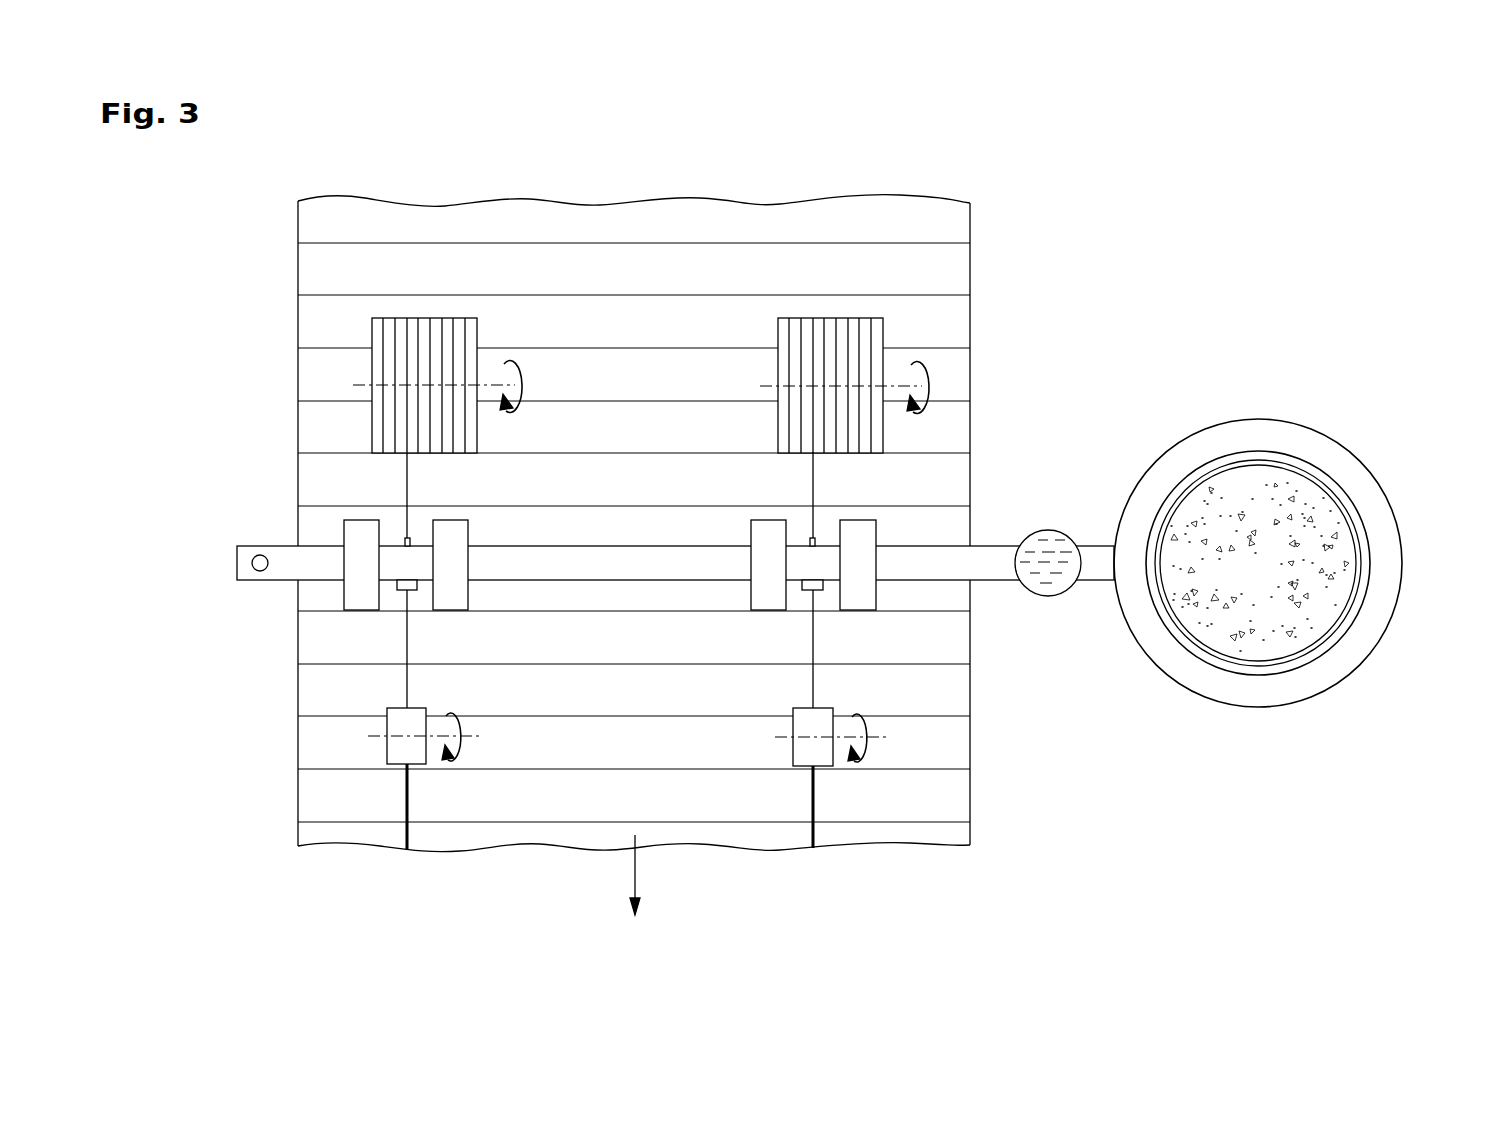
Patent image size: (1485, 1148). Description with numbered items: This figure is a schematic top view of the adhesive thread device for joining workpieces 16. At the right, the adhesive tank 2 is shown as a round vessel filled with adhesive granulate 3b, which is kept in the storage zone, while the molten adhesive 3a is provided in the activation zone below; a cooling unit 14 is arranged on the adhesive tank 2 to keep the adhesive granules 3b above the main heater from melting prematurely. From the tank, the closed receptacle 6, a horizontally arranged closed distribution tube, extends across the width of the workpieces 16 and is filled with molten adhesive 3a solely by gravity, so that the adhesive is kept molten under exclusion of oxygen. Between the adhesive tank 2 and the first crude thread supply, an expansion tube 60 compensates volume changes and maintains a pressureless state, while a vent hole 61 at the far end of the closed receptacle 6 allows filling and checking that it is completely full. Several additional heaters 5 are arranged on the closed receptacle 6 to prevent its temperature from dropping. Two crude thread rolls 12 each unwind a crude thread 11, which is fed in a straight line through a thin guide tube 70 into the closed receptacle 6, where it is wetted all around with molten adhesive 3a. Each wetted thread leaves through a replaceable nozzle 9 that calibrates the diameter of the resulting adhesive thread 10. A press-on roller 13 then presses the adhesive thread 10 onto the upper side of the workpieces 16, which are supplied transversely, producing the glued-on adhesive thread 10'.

The adhesive tank 2 is at (1343, 493).
The molten adhesive 3a is at (1055, 573).
The adhesive granulate 3b is at (1272, 525).
The additional heater 5 is at (344, 596).
The closed receptacle 6 is at (573, 580).
The nozzle 9 is at (397, 592).
The adhesive thread 10 is at (633, 660).
The glued-on adhesive thread 10' is at (632, 841).
The crude thread 11 is at (407, 482).
The crude thread roll 12 is at (372, 333).
The press-on roller 13 is at (387, 750).
The cooling unit 14 is at (1393, 507).
The workpiece 16 is at (357, 258).
The expansion tube 60 is at (1075, 535).
The vent hole 61 is at (252, 563).
The guide tube 70 is at (405, 540).